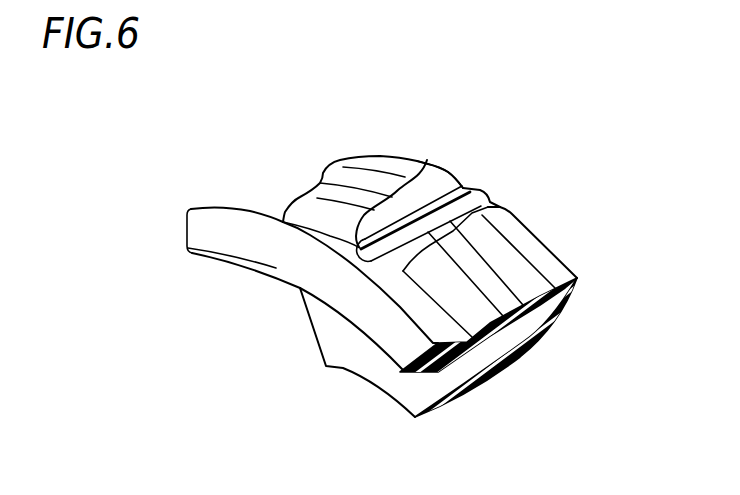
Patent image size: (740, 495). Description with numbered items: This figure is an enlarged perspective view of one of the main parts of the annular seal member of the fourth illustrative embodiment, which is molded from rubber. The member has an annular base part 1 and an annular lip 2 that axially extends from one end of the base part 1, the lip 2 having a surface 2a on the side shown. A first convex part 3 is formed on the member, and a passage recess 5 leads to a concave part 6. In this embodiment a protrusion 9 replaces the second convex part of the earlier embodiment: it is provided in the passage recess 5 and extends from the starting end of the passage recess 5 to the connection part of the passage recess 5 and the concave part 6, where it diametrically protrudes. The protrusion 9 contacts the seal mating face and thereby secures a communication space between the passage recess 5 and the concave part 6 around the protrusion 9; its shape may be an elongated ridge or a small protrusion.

The base part 1 is at (538, 325).
The annular lip 2 is at (318, 235).
The side surface 2a is at (392, 300).
The first convex part 3 is at (518, 250).
The passage recess 5 is at (435, 197).
The concave part 6 is at (474, 333).
The protrusion 9 is at (467, 198).